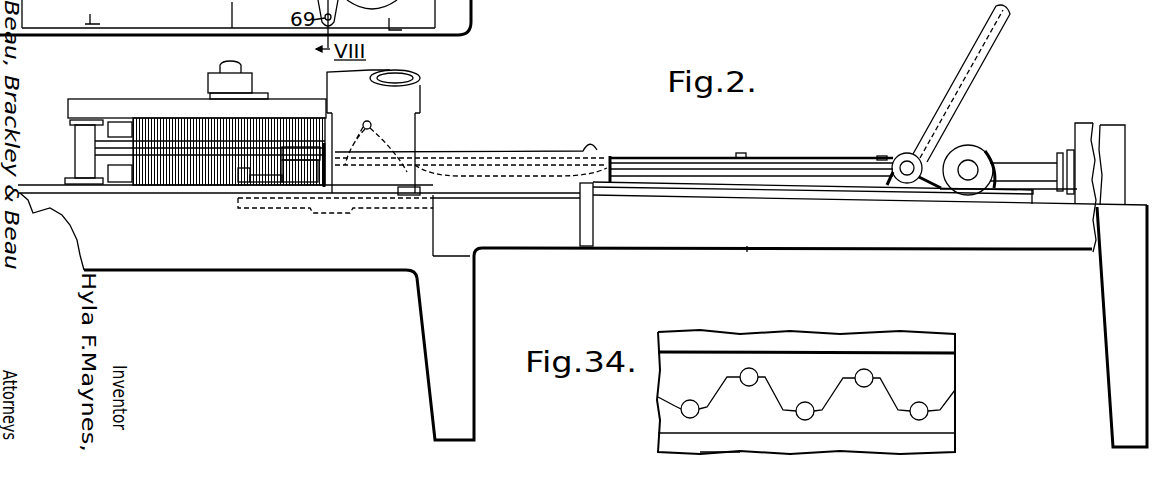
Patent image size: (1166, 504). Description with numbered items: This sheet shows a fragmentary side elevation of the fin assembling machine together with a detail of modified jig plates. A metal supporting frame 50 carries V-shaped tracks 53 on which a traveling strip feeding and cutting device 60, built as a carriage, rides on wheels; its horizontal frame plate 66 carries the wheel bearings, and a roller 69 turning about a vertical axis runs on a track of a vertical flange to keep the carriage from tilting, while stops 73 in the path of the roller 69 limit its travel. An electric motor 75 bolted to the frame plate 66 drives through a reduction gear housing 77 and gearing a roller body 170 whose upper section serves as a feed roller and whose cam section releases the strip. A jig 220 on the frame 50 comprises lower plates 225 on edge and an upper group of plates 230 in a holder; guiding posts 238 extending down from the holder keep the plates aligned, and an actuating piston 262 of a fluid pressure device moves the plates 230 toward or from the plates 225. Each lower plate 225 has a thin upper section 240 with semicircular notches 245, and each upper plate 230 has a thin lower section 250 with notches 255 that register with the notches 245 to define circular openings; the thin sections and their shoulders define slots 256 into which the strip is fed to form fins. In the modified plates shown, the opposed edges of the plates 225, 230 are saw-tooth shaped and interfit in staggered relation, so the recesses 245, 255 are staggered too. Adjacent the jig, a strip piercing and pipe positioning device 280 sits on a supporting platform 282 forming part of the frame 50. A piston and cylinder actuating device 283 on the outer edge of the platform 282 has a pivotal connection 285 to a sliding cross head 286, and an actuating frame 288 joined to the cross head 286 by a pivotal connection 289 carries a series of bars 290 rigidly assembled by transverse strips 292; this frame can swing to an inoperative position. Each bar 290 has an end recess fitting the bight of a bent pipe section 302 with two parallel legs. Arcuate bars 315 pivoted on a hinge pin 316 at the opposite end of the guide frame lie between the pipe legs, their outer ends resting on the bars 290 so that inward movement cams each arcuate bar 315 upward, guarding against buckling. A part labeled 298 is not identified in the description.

In FIG. 2, the supporting frame 50 is at (255, 272).
In FIG. 2, the rails or tracks 53 is at (474, 256).
In FIG. 2, the traveling strip feeding and cutting device 60 is at (268, 183).
In FIG. 2, the frame plate 66 is at (240, 0).
In FIG. 2, the roller 69 is at (356, 205).
In FIG. 2, the stops 73 is at (95, 15).
In FIG. 2, the electric motor 75 is at (410, 88).
In FIG. 2, the reduction gear housing 77 is at (407, 123).
In FIG. 2, the roller body 170 is at (307, 170).
In FIG. 2, the jig 220 is at (138, 99).
In FIG. 2, the lower plates 225 is at (170, 186).
In FIG. 34, the lower plates 225 is at (933, 446).
In FIG. 2, the upper plates 230 is at (199, 122).
In FIG. 34, the upper plates 230 is at (750, 347).
In FIG. 2, the guiding posts 238 is at (80, 160).
In FIG. 34, the upper thin section 240 is at (930, 426).
In FIG. 34, the semicircular notches 245 is at (795, 412).
In FIG. 34, the lower thin section 250 is at (808, 380).
In FIG. 34, the semicircular notches 255 is at (919, 401).
In FIG. 2, the slots 256 is at (133, 150).
In FIG. 2, the actuating piston 262 is at (220, 63).
In FIG. 2, the strip piercing and pipe positioning device 280 is at (611, 160).
In FIG. 2, the supporting platform 282 is at (747, 250).
In FIG. 2, the piston and cylinder actuating device 283 is at (1080, 128).
In FIG. 2, the pivotal connection 285 is at (969, 167).
In FIG. 2, the cross head 286 is at (1000, 197).
In FIG. 2, the actuating frame 288 is at (815, 157).
In FIG. 2, the pivotal connection 289 is at (899, 158).
In FIG. 2, the bars 290 is at (693, 166).
In FIG. 2, the strips 292 is at (740, 153).
In FIG. 2, the wire 298 is at (487, 152).
In FIG. 2, the pipe section 302 is at (530, 160).
In FIG. 2, the arcuate bars 315 is at (584, 143).
In FIG. 2, the hinge pin 316 is at (367, 121).